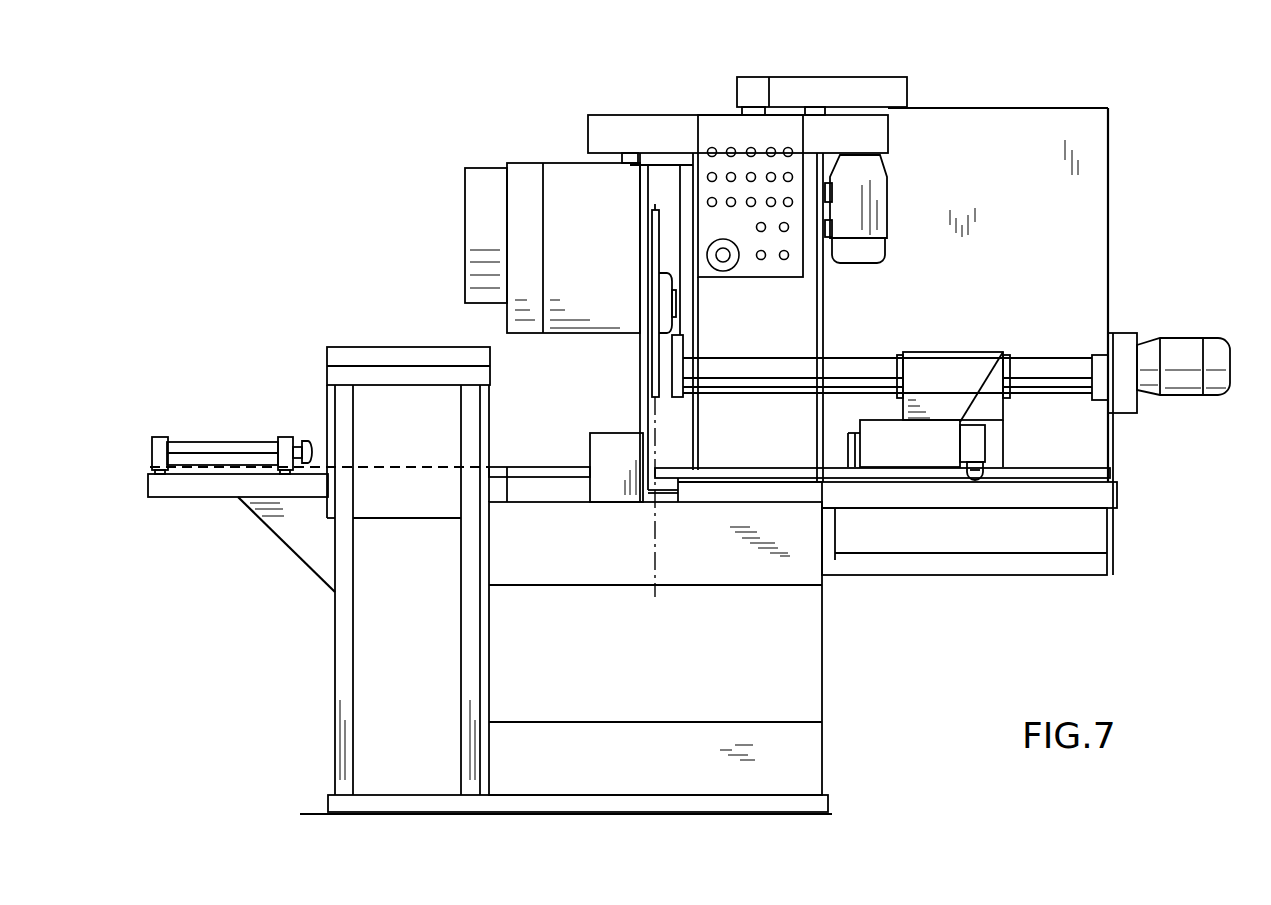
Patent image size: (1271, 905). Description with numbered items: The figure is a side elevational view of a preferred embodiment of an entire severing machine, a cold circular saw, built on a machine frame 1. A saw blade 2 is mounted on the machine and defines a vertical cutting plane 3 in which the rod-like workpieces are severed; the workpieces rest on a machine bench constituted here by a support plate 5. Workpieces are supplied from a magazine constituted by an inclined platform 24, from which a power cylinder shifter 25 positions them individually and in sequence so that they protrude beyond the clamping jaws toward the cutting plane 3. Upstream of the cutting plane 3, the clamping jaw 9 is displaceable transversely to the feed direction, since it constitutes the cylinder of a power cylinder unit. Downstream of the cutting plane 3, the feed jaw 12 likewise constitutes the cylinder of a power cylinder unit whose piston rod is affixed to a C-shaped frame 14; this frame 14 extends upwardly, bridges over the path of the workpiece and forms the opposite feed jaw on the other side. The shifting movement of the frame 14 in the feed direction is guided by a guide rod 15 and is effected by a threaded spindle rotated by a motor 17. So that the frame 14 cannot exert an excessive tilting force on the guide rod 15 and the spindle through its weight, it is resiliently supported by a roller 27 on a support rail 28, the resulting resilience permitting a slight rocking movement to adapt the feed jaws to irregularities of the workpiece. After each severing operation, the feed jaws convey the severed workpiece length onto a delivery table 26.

The machine frame 1 is at (805, 672).
The saw blade 2 is at (652, 380).
The cutting plane 3 is at (655, 567).
The support plate 5 is at (537, 470).
The clamping jaw 9 is at (600, 433).
The feed jaw 12 is at (950, 432).
The C-shaped frame 14 is at (973, 355).
The guide rod 15 is at (1053, 360).
The motor 17 is at (1185, 350).
The inclined platform 24 is at (355, 412).
The power cylinder shifter 25 is at (238, 442).
The delivery table 26 is at (1030, 500).
The roller 27 is at (985, 472).
The support rail 28 is at (1087, 490).